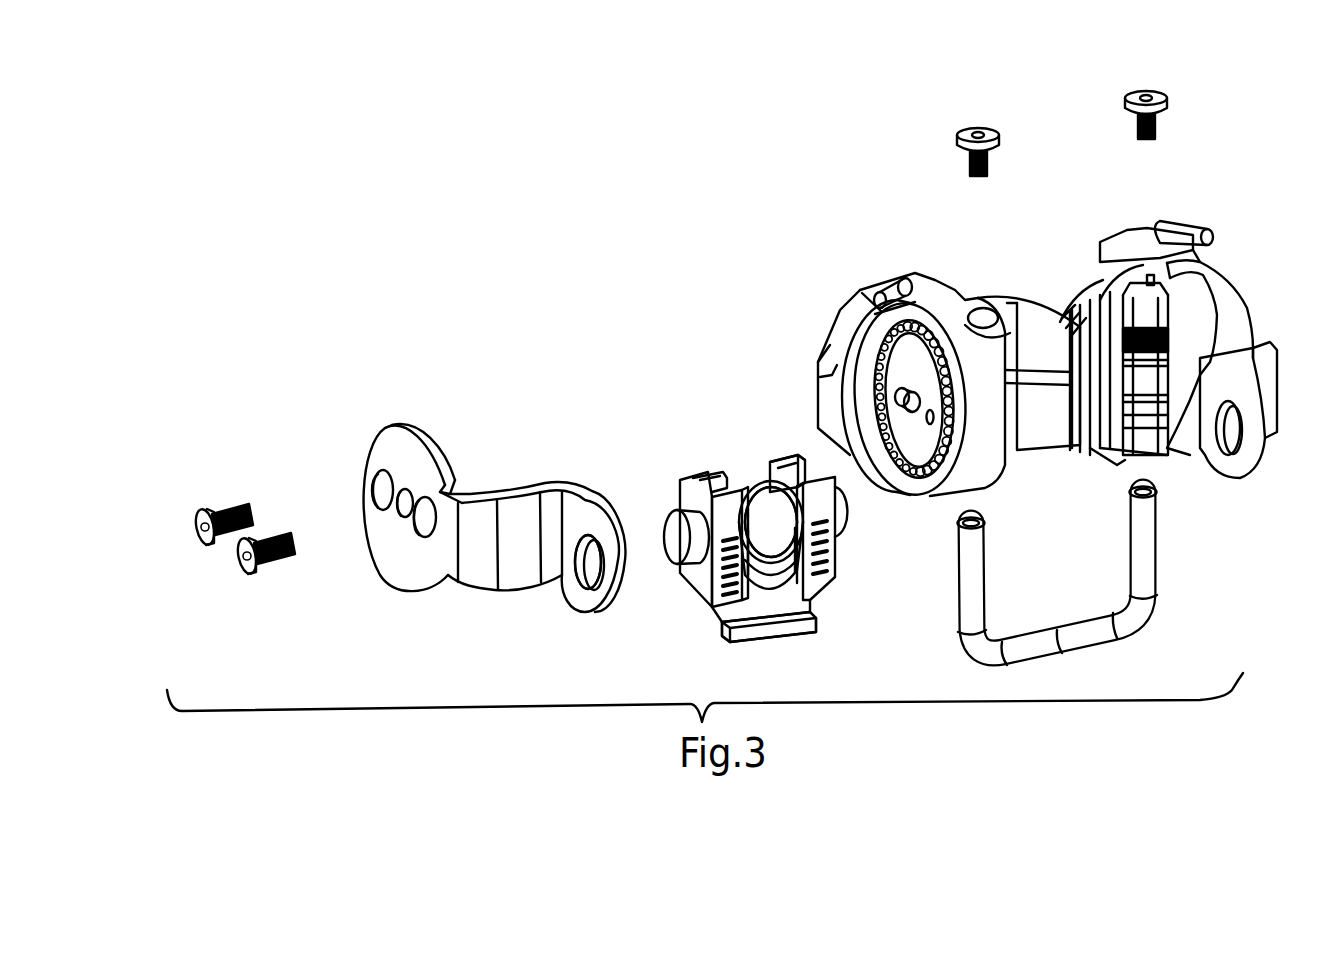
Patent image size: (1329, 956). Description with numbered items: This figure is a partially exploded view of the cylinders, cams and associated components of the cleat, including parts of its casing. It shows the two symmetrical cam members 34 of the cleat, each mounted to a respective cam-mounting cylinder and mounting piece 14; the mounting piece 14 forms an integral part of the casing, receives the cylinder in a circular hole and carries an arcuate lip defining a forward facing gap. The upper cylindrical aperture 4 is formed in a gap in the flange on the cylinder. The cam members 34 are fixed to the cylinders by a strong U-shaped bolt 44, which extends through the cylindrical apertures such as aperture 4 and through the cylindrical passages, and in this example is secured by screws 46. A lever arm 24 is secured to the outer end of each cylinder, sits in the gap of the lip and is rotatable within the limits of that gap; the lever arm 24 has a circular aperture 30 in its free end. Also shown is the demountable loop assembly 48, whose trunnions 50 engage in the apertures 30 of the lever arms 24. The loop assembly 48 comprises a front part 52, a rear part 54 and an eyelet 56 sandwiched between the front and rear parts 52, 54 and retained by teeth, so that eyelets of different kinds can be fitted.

The upper cylindrical aperture 4 is at (982, 316).
The mounting piece 14 is at (927, 290).
The lever arm 24 is at (497, 476).
The circular aperture 30 is at (586, 576).
The cam member 34 is at (1015, 283).
The U-shaped bolt 44 is at (1157, 553).
The screw 46 is at (970, 128).
The demountable loop assembly 48 is at (749, 436).
The trunnion 50 is at (672, 536).
The front part 52 is at (805, 600).
The rear part 54 is at (782, 460).
The eyelet 56 is at (748, 490).